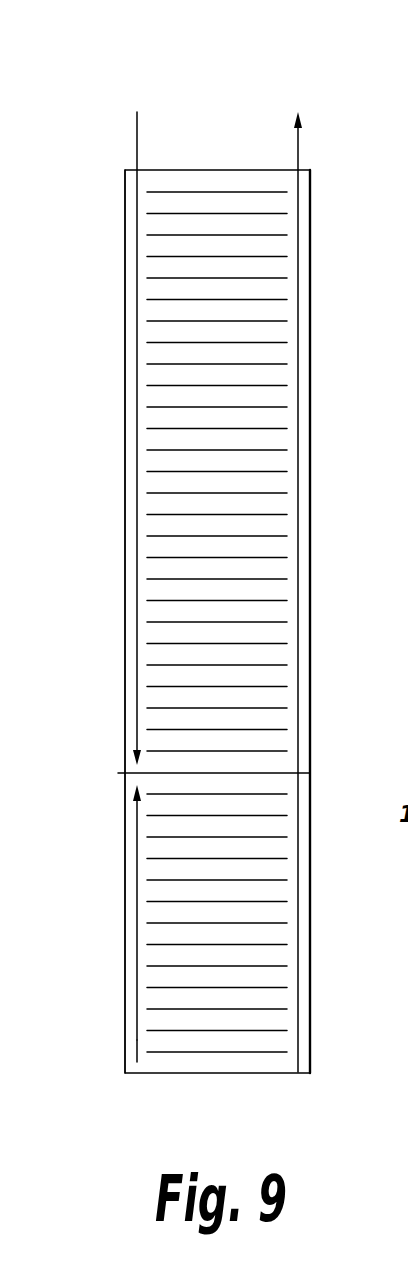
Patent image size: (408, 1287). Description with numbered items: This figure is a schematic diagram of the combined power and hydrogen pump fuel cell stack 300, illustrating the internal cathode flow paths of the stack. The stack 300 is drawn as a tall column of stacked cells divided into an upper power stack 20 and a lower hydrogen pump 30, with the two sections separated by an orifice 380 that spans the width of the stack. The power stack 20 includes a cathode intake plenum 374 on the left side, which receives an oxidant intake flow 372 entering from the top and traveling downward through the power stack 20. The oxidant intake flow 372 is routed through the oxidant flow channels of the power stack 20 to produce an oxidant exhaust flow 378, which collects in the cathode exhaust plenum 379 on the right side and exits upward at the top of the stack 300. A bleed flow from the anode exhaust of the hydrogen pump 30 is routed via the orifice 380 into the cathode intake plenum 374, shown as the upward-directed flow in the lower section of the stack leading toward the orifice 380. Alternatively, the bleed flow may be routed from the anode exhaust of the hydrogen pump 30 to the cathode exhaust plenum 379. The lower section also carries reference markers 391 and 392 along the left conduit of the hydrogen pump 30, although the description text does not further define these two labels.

The stack 300 is at (240, 93).
The power stack 20 is at (117, 170).
The hydrogen pump 30 is at (117, 773).
The oxidant intake flow 372 is at (136, 142).
The cathode intake plenum 374 is at (120, 650).
The oxidant exhaust flow 378 is at (298, 148).
The cathode exhaust plenum 379 is at (304, 590).
The orifice 380 is at (116, 773).
The return conduit 391 is at (133, 856).
The conduit end 392 is at (135, 1058).